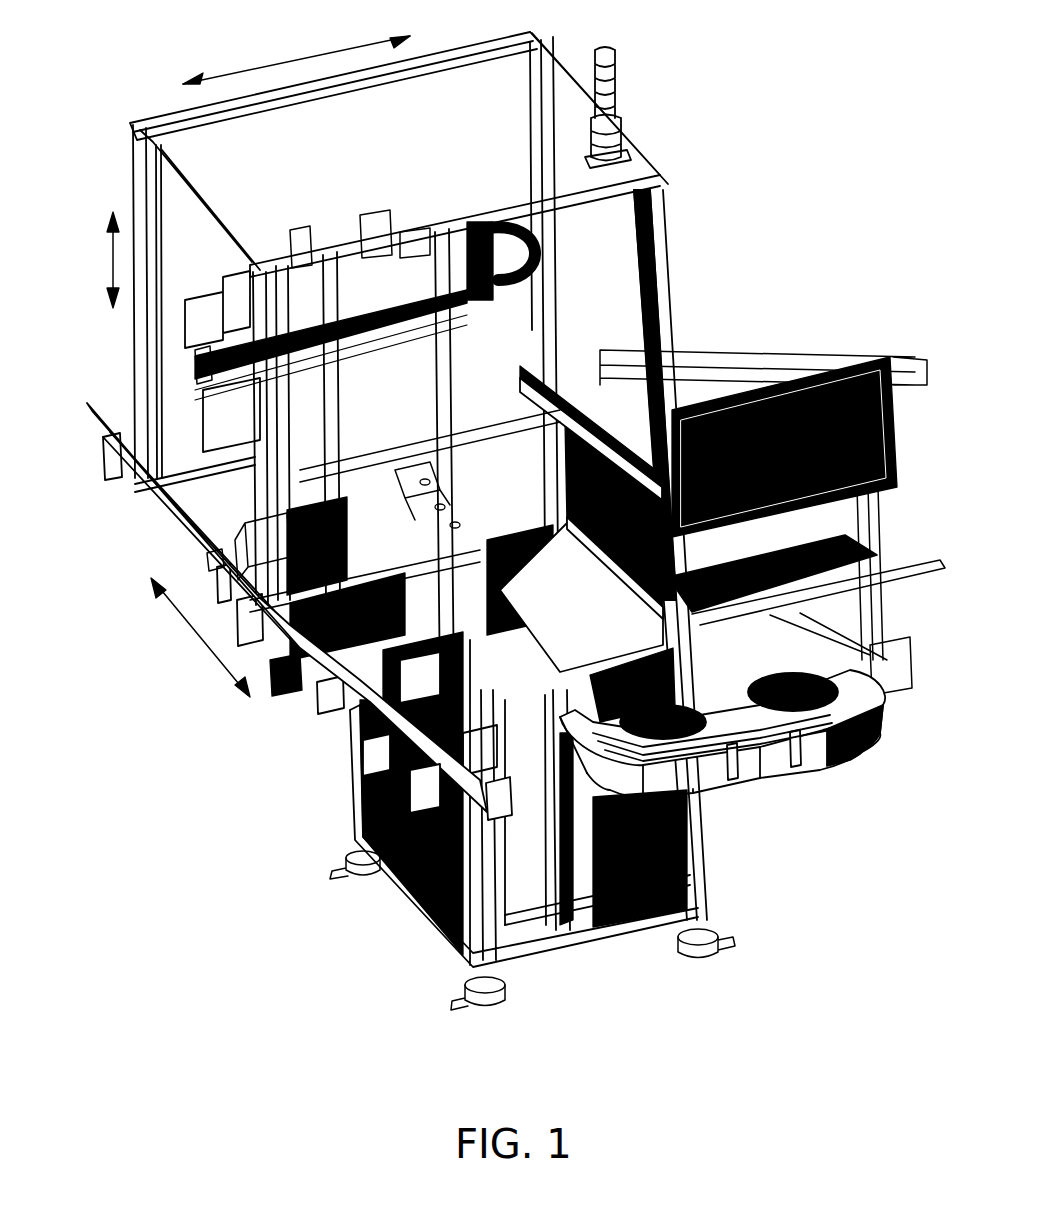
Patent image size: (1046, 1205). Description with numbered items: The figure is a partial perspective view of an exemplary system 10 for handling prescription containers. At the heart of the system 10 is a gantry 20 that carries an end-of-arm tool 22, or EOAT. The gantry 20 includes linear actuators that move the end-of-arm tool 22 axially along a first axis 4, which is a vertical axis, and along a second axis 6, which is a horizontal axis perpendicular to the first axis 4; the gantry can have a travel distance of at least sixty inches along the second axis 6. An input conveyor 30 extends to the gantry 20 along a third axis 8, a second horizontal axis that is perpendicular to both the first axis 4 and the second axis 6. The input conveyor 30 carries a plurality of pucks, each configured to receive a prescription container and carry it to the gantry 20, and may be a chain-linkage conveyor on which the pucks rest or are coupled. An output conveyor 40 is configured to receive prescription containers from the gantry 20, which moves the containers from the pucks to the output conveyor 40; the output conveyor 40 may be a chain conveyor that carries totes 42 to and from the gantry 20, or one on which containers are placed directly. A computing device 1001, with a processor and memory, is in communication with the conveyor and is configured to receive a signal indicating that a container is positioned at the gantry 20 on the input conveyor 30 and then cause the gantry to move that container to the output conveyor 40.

The system 10 is at (106, 74).
The second axis 6 is at (297, 60).
The first axis 4 is at (98, 258).
The third axis 8 is at (208, 660).
The gantry 20 is at (195, 362).
The end-of-arm tool 22 is at (447, 485).
The output conveyor 40 is at (233, 525).
The tote 42 is at (258, 570).
The computing device 1001 is at (896, 480).
The input conveyor 30 is at (860, 758).